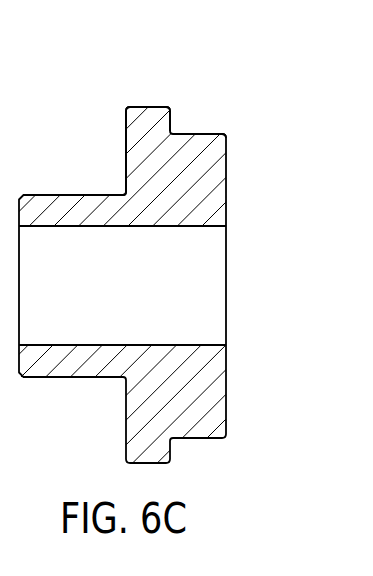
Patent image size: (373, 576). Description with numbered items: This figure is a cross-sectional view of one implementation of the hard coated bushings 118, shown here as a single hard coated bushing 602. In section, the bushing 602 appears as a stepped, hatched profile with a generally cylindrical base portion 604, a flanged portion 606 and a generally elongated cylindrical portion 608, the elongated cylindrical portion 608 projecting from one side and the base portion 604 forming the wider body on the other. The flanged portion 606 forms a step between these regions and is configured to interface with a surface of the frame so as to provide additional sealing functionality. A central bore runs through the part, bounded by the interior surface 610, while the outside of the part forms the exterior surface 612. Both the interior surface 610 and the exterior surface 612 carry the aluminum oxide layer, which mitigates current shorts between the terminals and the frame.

The hard coated bushings 118 is at (210, 410).
The hard coated bushing 602 is at (148, 108).
The generally cylindrical base portion 604 is at (195, 134).
The flanged portion 606 is at (125, 137).
The generally elongated cylindrical portion 608 is at (80, 195).
The interior surface 610 is at (200, 226).
The exterior surface 612 is at (78, 377).